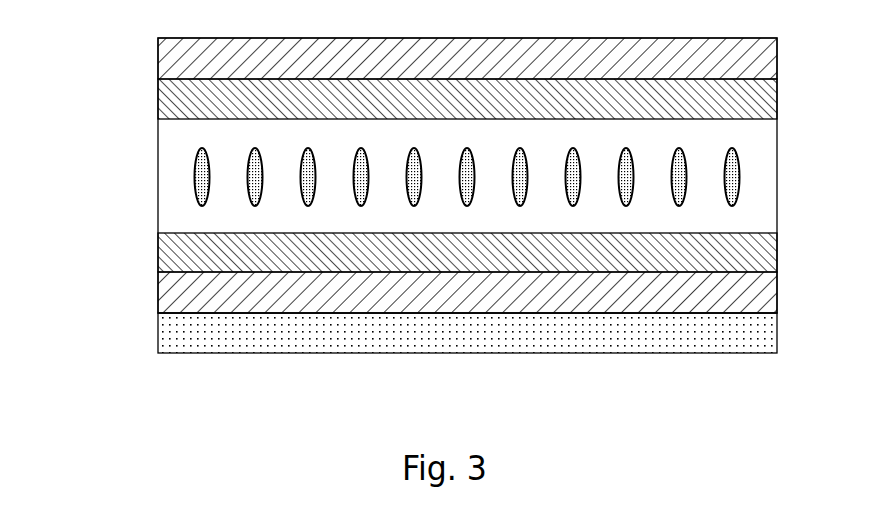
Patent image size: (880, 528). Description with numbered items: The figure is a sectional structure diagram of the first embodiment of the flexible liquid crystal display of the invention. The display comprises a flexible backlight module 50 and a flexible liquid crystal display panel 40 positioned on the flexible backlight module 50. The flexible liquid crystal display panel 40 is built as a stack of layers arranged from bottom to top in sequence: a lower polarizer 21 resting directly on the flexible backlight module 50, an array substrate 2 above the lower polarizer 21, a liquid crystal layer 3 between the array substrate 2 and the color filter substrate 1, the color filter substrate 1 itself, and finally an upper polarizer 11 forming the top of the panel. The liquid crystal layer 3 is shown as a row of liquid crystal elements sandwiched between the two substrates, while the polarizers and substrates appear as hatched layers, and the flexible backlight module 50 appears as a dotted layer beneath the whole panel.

The flexible liquid crystal display panel 40 is at (110, 38).
The upper polarizer 11 is at (190, 60).
The color filter substrate 1 is at (183, 97).
The liquid crystal layer 3 is at (199, 170).
The array substrate 2 is at (183, 252).
The lower polarizer 21 is at (190, 293).
The flexible backlight module 50 is at (188, 338).